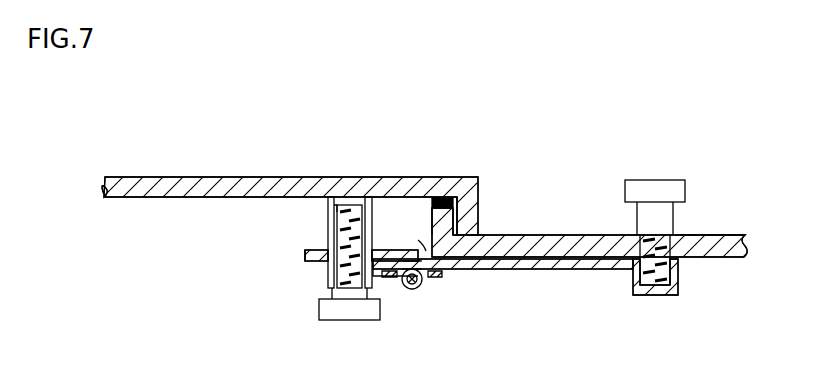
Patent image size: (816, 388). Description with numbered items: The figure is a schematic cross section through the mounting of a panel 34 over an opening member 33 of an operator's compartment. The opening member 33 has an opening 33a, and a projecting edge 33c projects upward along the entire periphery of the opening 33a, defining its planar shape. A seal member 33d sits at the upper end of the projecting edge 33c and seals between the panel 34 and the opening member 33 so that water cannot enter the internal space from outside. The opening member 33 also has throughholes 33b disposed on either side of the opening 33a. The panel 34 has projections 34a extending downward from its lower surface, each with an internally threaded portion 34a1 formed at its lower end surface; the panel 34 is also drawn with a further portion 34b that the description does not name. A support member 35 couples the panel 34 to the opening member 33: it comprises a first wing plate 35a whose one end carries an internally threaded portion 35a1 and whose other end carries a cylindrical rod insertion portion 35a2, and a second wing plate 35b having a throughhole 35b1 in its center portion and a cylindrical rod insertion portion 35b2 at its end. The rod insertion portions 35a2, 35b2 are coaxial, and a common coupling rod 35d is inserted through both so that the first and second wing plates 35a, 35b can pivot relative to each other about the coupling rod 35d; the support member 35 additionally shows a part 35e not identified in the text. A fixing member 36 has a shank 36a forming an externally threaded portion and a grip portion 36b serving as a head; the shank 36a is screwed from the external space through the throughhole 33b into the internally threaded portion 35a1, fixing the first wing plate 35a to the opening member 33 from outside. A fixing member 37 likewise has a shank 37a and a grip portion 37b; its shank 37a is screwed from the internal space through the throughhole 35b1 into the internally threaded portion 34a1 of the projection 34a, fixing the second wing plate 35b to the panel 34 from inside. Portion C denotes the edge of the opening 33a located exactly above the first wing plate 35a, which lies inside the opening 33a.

The opening member 33 is at (562, 247).
The opening 33a is at (176, 222).
The throughhole 33b is at (672, 246).
The projecting edge 33c is at (433, 211).
The seal member 33d is at (444, 198).
The panel 34 is at (244, 190).
The projection 34a is at (328, 210).
The internally threaded portion 34a1 is at (343, 216).
The flange 34b is at (465, 222).
The support member 35 is at (602, 282).
The first wing plate 35a is at (546, 270).
The internally threaded portion 35a1 is at (673, 291).
The rod insertion portion 35a2 is at (412, 291).
The second wing plate 35b is at (318, 258).
The throughhole 35b1 is at (330, 279).
The rod insertion portion 35b2 is at (426, 312).
The coupling rod 35d is at (417, 288).
The projections 35e is at (441, 278).
The fixing member 36 is at (660, 190).
The shank 36a is at (679, 262).
The grip portion 36b is at (681, 193).
The fixing member 37 is at (340, 312).
The shank 37a is at (353, 207).
The grip portion 37b is at (319, 311).
The portion C is at (414, 237).